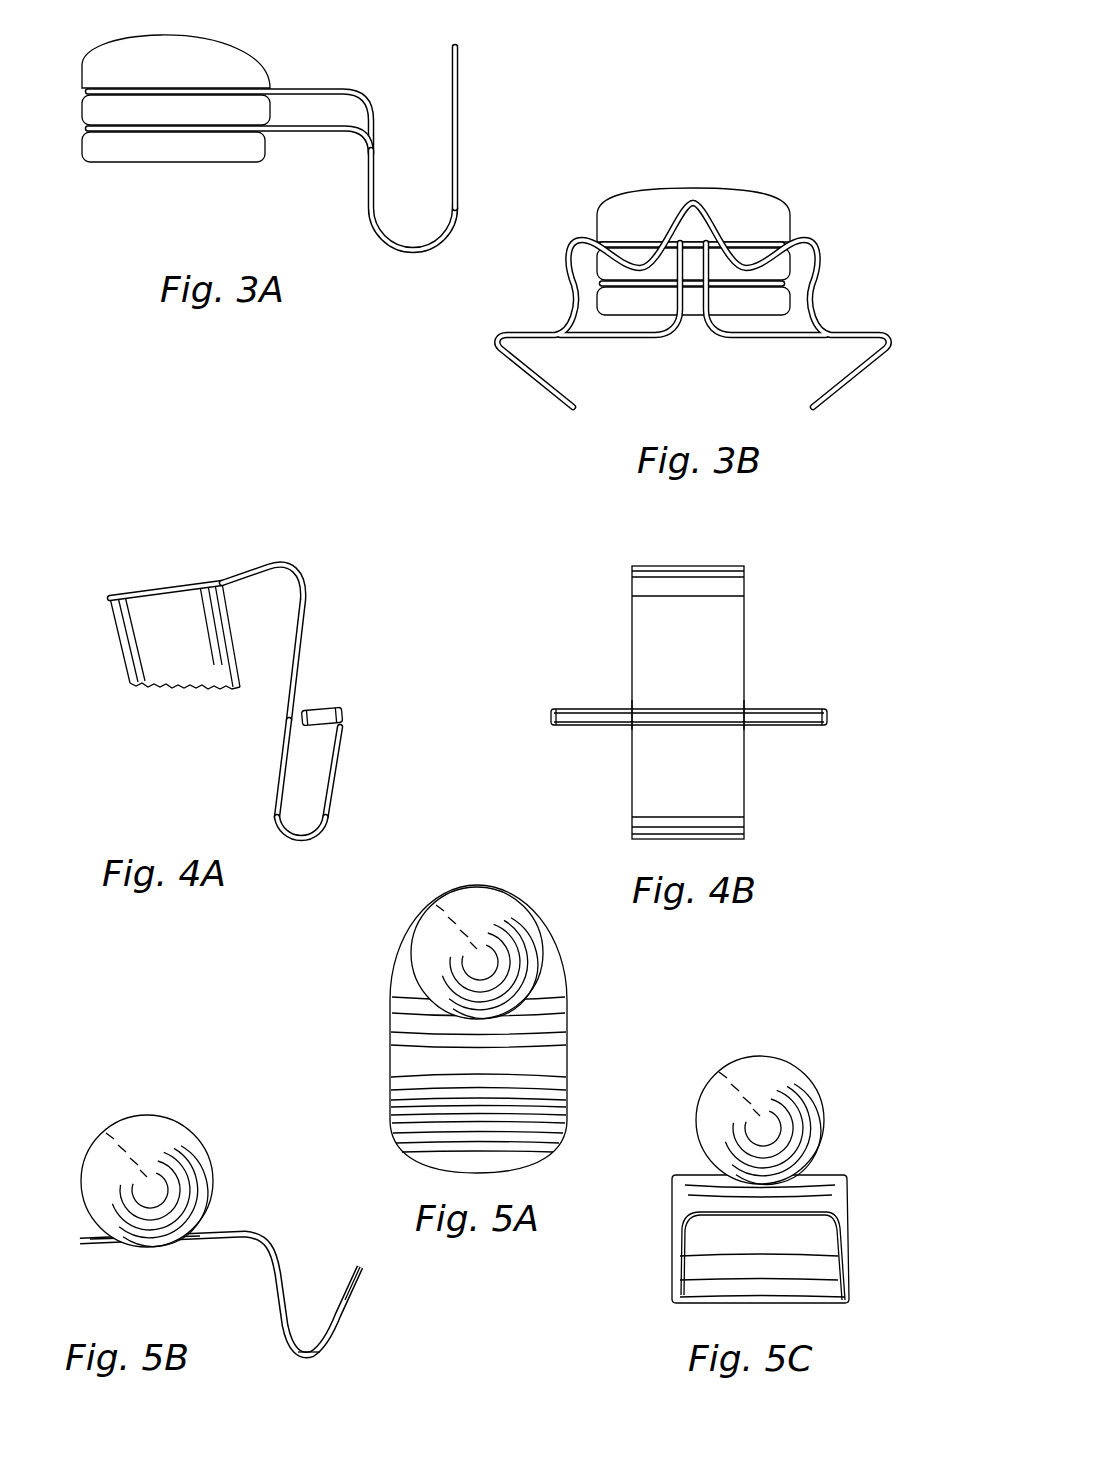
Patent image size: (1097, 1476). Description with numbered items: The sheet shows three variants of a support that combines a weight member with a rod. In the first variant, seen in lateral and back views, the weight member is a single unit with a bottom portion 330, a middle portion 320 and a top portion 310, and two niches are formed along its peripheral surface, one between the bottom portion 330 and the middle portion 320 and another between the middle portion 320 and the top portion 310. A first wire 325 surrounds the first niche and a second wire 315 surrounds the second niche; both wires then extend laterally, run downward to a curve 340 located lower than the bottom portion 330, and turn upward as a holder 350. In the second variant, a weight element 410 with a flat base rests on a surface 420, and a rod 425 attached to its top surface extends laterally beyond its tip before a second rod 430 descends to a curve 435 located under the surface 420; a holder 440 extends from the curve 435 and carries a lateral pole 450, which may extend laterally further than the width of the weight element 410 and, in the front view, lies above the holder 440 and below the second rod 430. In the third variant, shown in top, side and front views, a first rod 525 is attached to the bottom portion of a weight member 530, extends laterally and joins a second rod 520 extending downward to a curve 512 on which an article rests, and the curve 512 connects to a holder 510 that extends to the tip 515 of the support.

In FIG. 3A, the top portion 310 is at (200, 35).
In FIG. 3B, the top portion 310 is at (753, 200).
In FIG. 3A, the second wire 315 is at (86, 89).
In FIG. 3B, the second wire 315 is at (757, 233).
In FIG. 3A, the middle portion 320 is at (82, 115).
In FIG. 3B, the middle portion 320 is at (693, 264).
In FIG. 3A, the first wire 325 is at (88, 133).
In FIG. 3B, the first wire 325 is at (763, 283).
In FIG. 3A, the bottom portion 330 is at (123, 160).
In FIG. 3B, the bottom portion 330 is at (693, 301).
In FIG. 3A, the curve 340 is at (415, 253).
In FIG. 3B, the curve 340 is at (530, 373).
In FIG. 3A, the holder 350 is at (460, 128).
In FIG. 4A, the weight element 410 is at (112, 645).
In FIG. 4A, the surface 420 is at (203, 702).
In FIG. 4A, the rod 425 is at (175, 582).
In FIG. 4B, the rod 425 is at (748, 575).
In FIG. 4A, the second rod 430 is at (305, 623).
In FIG. 4B, the second rod 430 is at (637, 652).
In FIG. 4A, the curve 435 is at (315, 848).
In FIG. 4B, the curve 435 is at (748, 826).
In FIG. 4A, the holder 440 is at (335, 787).
In FIG. 4B, the holder 440 is at (637, 777).
In FIG. 4A, the lateral pole 450 is at (343, 718).
In FIG. 4B, the lateral pole 450 is at (810, 722).
In FIG. 5B, the holder 510 is at (255, 1277).
In FIG. 5C, the holder 510 is at (753, 1199).
In FIG. 5A, the curve 512 is at (388, 1115).
In FIG. 5B, the curve 512 is at (300, 1360).
In FIG. 5B, the tip 515 is at (358, 1265).
In FIG. 5C, the tip 515 is at (838, 1215).
In FIG. 5A, the second rod 520 is at (475, 1029).
In FIG. 5B, the second rod 520 is at (283, 1305).
In FIG. 5C, the second rod 520 is at (770, 1199).
In FIG. 5A, the first rod 525 is at (560, 1020).
In FIG. 5B, the first rod 525 is at (203, 1240).
In FIG. 5C, the first rod 525 is at (683, 1175).
In FIG. 5A, the weight member 530 is at (427, 927).
In FIG. 5B, the weight member 530 is at (140, 1118).
In FIG. 5C, the weight member 530 is at (807, 1077).